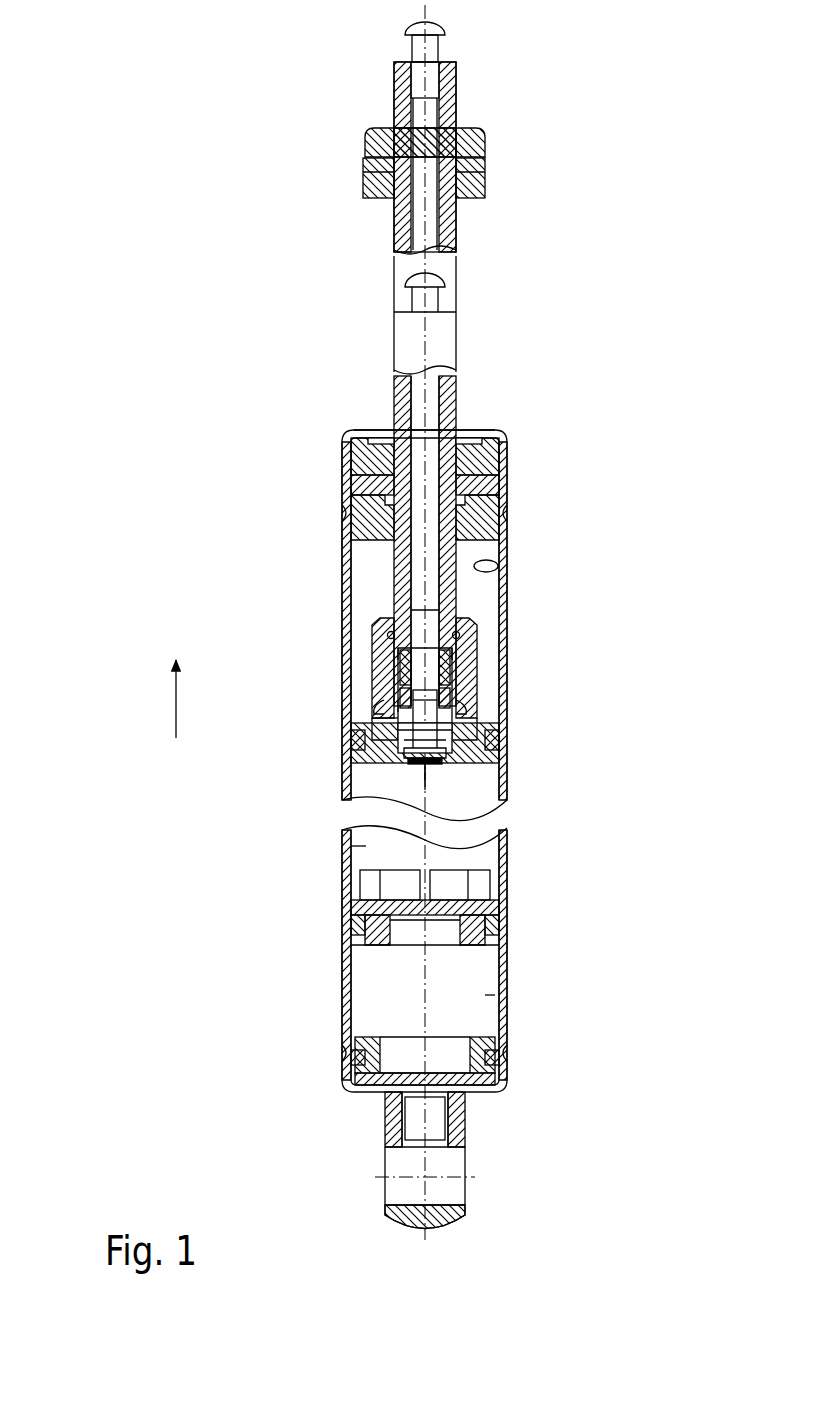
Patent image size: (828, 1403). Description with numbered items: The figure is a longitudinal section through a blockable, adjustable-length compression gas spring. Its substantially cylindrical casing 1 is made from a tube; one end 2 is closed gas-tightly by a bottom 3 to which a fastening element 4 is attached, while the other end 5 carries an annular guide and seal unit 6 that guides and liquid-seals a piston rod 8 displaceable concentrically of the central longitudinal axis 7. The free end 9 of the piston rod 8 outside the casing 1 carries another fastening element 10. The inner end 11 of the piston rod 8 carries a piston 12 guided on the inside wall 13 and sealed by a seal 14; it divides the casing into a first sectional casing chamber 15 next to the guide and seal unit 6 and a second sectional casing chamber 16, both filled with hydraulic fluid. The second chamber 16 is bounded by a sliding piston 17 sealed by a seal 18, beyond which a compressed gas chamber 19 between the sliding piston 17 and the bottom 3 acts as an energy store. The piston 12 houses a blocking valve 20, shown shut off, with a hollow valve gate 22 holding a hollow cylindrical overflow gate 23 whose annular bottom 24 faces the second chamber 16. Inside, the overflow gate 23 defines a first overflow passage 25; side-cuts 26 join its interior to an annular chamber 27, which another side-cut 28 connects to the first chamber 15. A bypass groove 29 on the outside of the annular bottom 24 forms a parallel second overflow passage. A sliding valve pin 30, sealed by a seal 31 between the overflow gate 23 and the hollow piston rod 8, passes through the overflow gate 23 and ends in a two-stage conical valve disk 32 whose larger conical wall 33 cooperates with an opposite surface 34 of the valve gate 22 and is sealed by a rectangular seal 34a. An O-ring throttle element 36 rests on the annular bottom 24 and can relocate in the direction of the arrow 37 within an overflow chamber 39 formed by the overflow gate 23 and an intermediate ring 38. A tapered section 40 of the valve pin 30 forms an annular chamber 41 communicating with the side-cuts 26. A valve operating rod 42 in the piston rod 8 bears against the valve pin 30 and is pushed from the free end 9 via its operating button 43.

The casing 1 is at (340, 597).
The end of the casing 2 is at (348, 1086).
The bottom 3 is at (342, 1043).
The fastening element 4 is at (455, 1162).
The other end of the casing 5 is at (495, 440).
The guide and seal unit 6 is at (480, 470).
The central longitudinal axis 7 is at (432, 192).
The piston rod 8 is at (455, 233).
The free end of the piston rod 9 is at (455, 90).
The fastening element 10 is at (475, 148).
The end of the piston rod inside the casing 11 is at (448, 525).
The piston 12 is at (470, 745).
The inside wall 13 is at (498, 566).
The seal 14 is at (490, 740).
The first sectional casing chamber 15 is at (483, 548).
The second sectional casing chamber 16 is at (351, 846).
The sliding piston 17 is at (470, 906).
The seal 18 is at (455, 918).
The compressed gas chamber 19 is at (485, 995).
The blocking valve 20 is at (426, 776).
The valve gate 22 is at (470, 660).
The overflow gate 23 is at (440, 765).
The annular bottom 24 is at (435, 766).
The first overflow passage 25 is at (398, 718).
The side-cuts 26 is at (455, 710).
The annular chamber 27 is at (410, 712).
The side-cut 28 is at (470, 726).
The bypass groove 29 is at (405, 735).
The valve pin 30 is at (440, 622).
The seal 31 is at (448, 690).
The valve disk 32 is at (430, 770).
The conical wall 33 is at (462, 896).
The opposite surface 34 is at (425, 790).
The seal 34a is at (420, 760).
The throttle element 36 is at (410, 745).
The arrow 37 is at (172, 709).
The intermediate ring 38 is at (452, 700).
The overflow chamber 39 is at (398, 718).
The tapered section 40 is at (402, 700).
The annular chamber 41 is at (408, 705).
The valve operating rod 42 is at (430, 415).
The operating button 43 is at (432, 28).